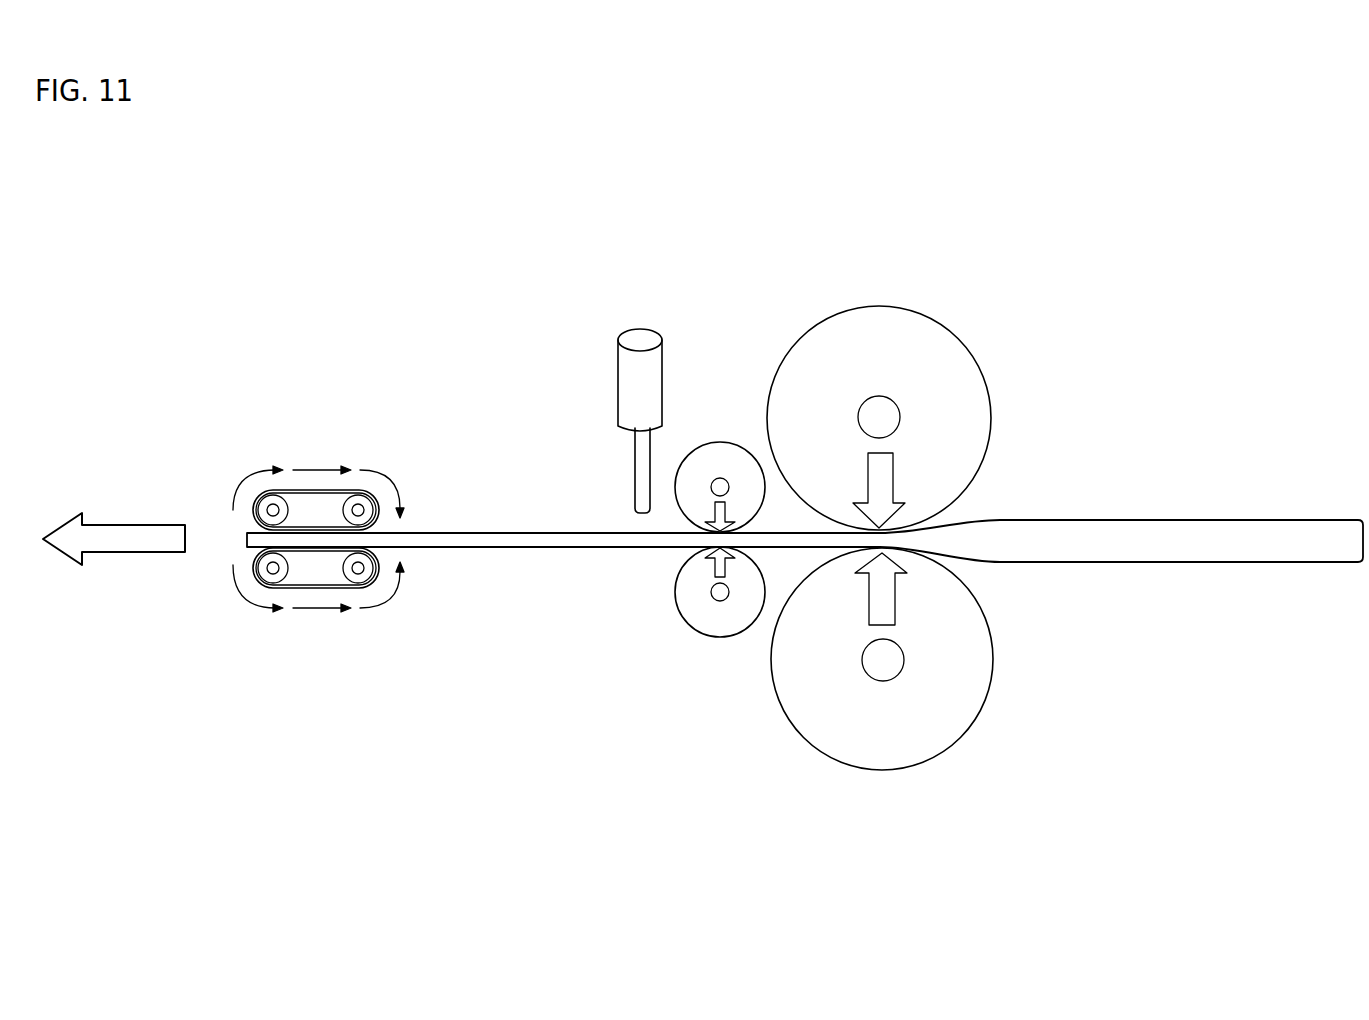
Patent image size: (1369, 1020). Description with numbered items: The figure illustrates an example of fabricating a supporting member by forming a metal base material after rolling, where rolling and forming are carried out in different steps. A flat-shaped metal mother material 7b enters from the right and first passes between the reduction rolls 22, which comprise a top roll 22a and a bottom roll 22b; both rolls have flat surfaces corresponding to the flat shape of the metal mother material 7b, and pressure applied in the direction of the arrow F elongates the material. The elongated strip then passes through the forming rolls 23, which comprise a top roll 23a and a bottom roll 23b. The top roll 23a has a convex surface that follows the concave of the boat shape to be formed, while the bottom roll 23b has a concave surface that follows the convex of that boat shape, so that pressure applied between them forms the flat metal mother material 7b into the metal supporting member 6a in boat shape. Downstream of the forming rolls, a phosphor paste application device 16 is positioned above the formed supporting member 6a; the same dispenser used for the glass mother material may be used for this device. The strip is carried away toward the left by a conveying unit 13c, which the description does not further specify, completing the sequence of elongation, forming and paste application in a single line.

The belt conveying unit 13c is at (310, 490).
The metal supporting member 6a is at (488, 532).
The metal mother material 7b is at (1170, 520).
The phosphor paste application device 16 is at (638, 332).
The reduction rolls 22 is at (882, 270).
The top roll 22a is at (957, 335).
The bottom roll 22b is at (995, 662).
The forming rolls 23 is at (660, 610).
The top roll 23a is at (718, 442).
The bottom roll 23b is at (723, 637).
The arrow F is at (897, 600).